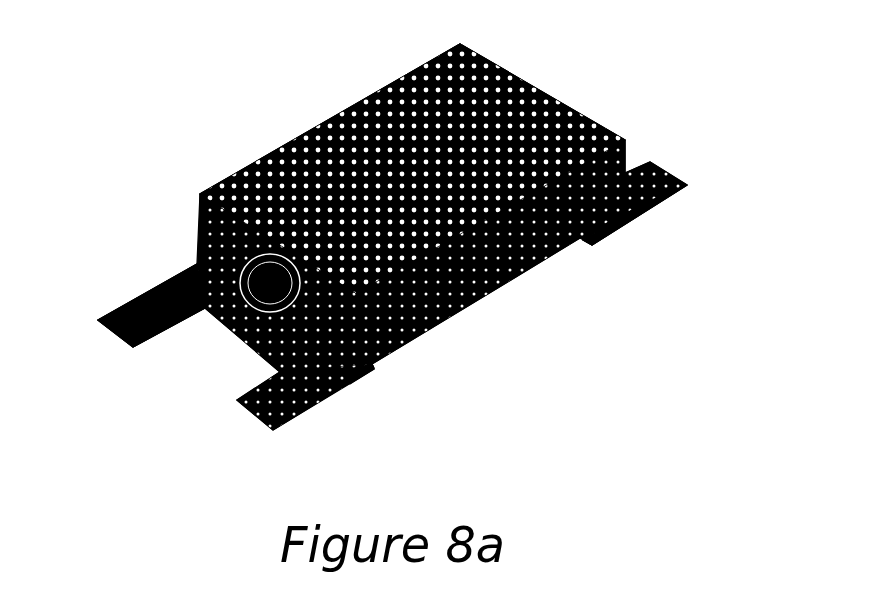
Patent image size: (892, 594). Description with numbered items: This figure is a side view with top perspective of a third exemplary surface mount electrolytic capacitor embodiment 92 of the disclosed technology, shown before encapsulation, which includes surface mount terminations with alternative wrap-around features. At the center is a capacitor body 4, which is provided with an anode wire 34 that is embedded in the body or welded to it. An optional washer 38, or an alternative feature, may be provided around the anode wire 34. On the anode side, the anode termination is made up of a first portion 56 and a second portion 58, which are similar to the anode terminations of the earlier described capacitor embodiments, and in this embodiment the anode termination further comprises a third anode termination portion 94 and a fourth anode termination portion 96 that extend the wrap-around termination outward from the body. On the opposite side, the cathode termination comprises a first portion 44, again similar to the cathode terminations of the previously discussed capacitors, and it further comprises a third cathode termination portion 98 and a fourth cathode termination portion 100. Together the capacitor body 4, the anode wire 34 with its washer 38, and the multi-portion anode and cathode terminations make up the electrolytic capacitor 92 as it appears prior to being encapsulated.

The capacitor body 4 is at (488, 270).
The anode wire 34 is at (240, 308).
The washer 38 is at (193, 263).
The first portion of cathode termination 44 is at (610, 237).
The first portion of anode termination 56 is at (373, 380).
The second portion of anode termination 58 is at (237, 300).
The third exemplary electrolytic capacitor embodiment 92 is at (705, 96).
The third anode termination portion 94 is at (104, 322).
The fourth anode termination portion 96 is at (262, 410).
The third cathode termination portion 98 is at (658, 184).
The fourth cathode termination portion 100 is at (582, 90).